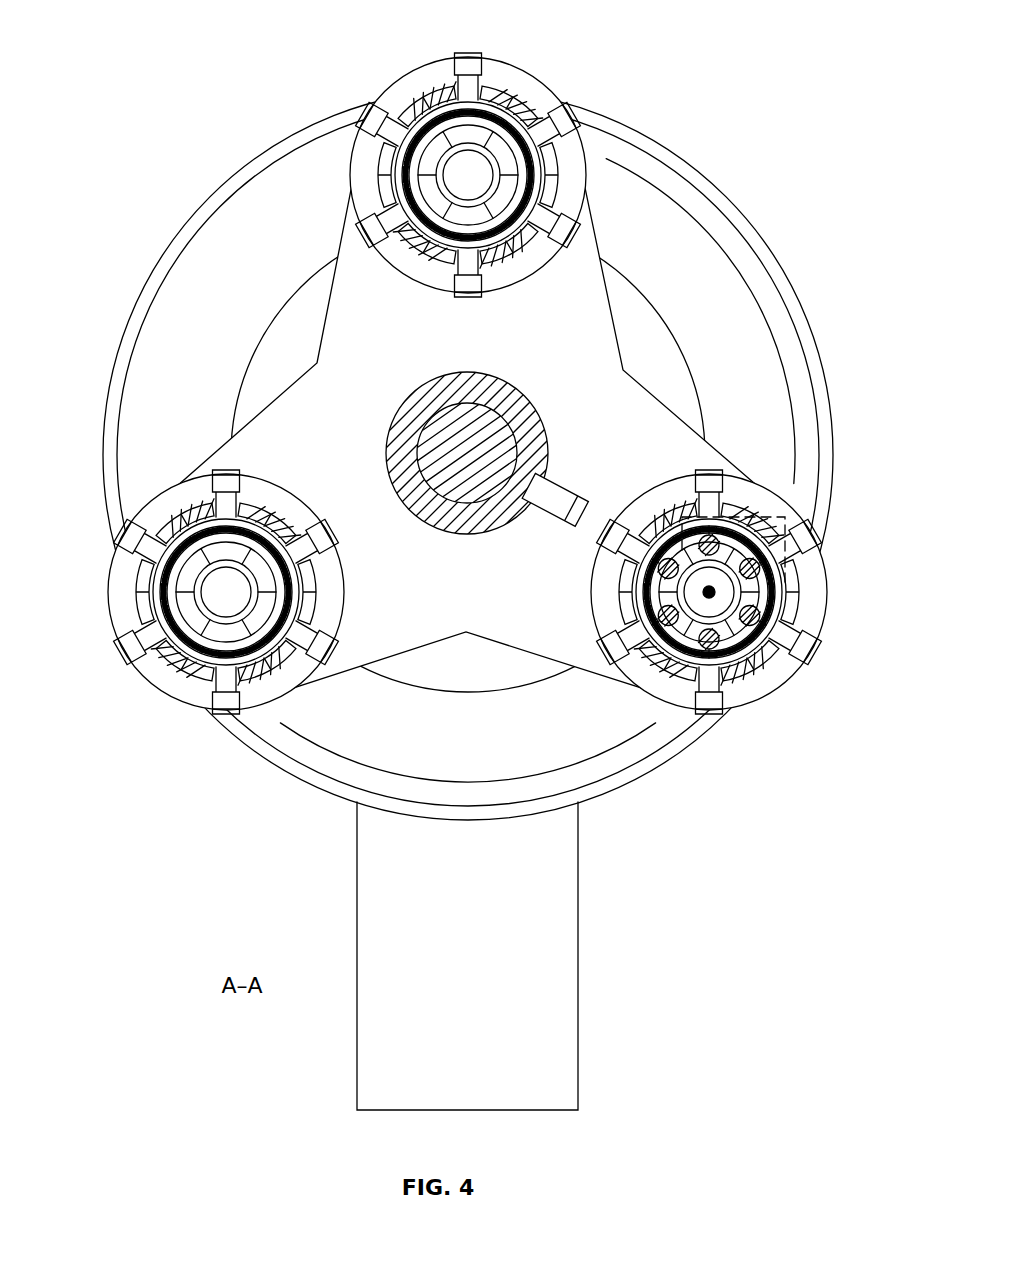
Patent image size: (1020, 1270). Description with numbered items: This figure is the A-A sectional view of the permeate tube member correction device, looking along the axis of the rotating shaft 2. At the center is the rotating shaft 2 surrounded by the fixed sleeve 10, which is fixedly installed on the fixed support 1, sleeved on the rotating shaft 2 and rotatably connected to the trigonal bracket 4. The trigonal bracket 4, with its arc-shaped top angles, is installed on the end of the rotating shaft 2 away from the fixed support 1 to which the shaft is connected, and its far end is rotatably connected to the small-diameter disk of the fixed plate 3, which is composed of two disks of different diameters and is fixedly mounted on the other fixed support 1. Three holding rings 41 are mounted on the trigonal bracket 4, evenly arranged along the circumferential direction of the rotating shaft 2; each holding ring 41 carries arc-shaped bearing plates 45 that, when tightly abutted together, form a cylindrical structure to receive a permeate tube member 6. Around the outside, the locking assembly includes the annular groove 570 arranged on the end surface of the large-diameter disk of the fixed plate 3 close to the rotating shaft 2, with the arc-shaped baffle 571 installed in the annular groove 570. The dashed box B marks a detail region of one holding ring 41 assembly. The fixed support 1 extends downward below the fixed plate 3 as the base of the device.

The fixed support 1 is at (528, 957).
The rotating shaft 2 is at (470, 478).
The fixed plate 3 is at (640, 318).
The trigonal bracket 4 is at (600, 385).
The permeate tube member 6 is at (150, 587).
The fixed sleeve 10 is at (395, 410).
The holding ring 41 is at (412, 83).
The arc-shaped bearing plate 45 is at (200, 515).
The annular groove 570 is at (253, 283).
The arc-shaped baffle 571 is at (800, 440).
The detail region B is at (790, 582).